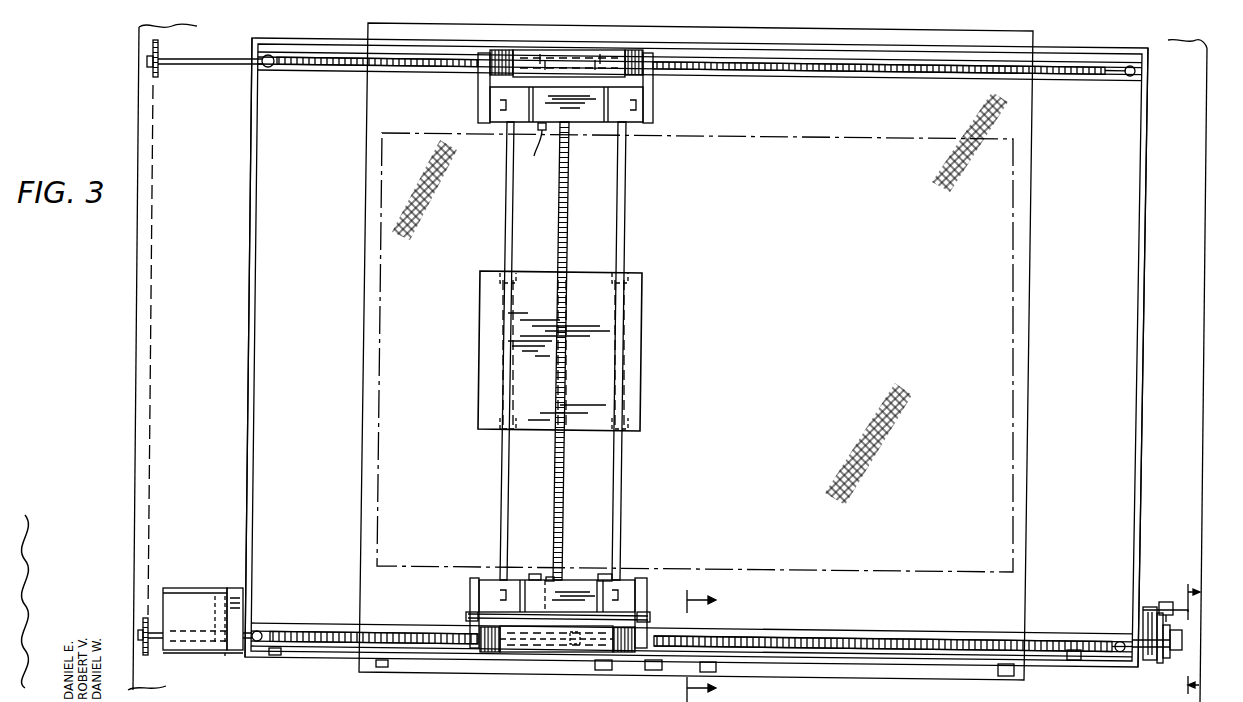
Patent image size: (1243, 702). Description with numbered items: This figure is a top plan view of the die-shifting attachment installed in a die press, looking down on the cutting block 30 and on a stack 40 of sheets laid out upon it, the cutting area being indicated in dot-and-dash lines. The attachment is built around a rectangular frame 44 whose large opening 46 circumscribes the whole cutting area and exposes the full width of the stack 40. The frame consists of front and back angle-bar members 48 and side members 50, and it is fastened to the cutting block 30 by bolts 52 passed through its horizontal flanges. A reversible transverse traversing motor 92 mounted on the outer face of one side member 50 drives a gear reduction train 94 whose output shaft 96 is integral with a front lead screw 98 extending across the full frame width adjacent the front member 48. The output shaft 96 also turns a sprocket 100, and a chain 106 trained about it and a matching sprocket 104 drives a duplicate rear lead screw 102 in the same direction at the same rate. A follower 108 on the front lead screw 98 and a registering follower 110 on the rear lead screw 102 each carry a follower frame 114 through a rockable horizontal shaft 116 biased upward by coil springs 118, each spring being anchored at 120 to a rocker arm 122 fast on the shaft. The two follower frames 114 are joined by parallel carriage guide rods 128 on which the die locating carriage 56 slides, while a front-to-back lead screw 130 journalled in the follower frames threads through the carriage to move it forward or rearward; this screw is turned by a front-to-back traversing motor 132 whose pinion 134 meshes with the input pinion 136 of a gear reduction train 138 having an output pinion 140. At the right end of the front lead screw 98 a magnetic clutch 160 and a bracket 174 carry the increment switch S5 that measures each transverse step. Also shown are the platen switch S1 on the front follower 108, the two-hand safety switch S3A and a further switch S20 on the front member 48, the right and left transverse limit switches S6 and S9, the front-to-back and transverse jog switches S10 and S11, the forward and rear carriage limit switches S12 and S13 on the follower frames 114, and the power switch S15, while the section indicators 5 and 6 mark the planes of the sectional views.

The cutting block 30 is at (137, 320).
The stack of sheets 40 is at (934, 676).
The rectangular frame 44 is at (1143, 548).
The opening 46 is at (1128, 414).
The front and back members 48 is at (320, 37).
The side members 50 is at (1147, 300).
The bolts 52 is at (1118, 641).
The die locating carriage 56 is at (642, 292).
The transverse traversing electrical motor 92 is at (188, 588).
The gear reduction train 94 is at (237, 588).
The output shaft 96 is at (231, 656).
The front lead screw 98 is at (903, 640).
The sprocket 100 is at (143, 621).
The rear lead screw 102 is at (919, 73).
The sprocket 104 is at (162, 49).
The chain 106 is at (158, 100).
The follower 108 is at (568, 653).
The follower 110 is at (590, 54).
The follower frame 114 is at (642, 125).
The horizontal shaft 116 is at (555, 647).
The coil springs 118 is at (482, 653).
The spring anchor 120 is at (651, 617).
The rocker arm 122 is at (640, 596).
The carriage guide rods 128 is at (626, 453).
The front-to-back traversing lead screw 130 is at (560, 231).
The front-to-back traversing electric motor 132 is at (482, 618).
The pinion 134 is at (536, 574).
The input pinion 136 is at (565, 577).
The gear reduction train 138 is at (545, 578).
The output pinion 140 is at (560, 606).
The magnetic clutch 160 is at (1166, 668).
The bracket 174 is at (1188, 630).
The platen switch S1 is at (606, 637).
The two-hand safety switch S3A is at (382, 668).
The increment switch S5 is at (1165, 602).
The right-hand transverse carriage limit switch S6 is at (1074, 660).
The left-hand transverse carriage limit switch S9 is at (276, 656).
The forward-and-back manual jog switch S10 is at (603, 670).
The transverse manual jog switch S11 is at (652, 670).
The forward limit switch S12 is at (606, 574).
The rear limit switch S13 is at (533, 152).
The power switch S15 is at (716, 664).
The switch S20 is at (1008, 676).
The section line 5- 5 is at (709, 646).
The section line 6- 6 is at (1203, 643).